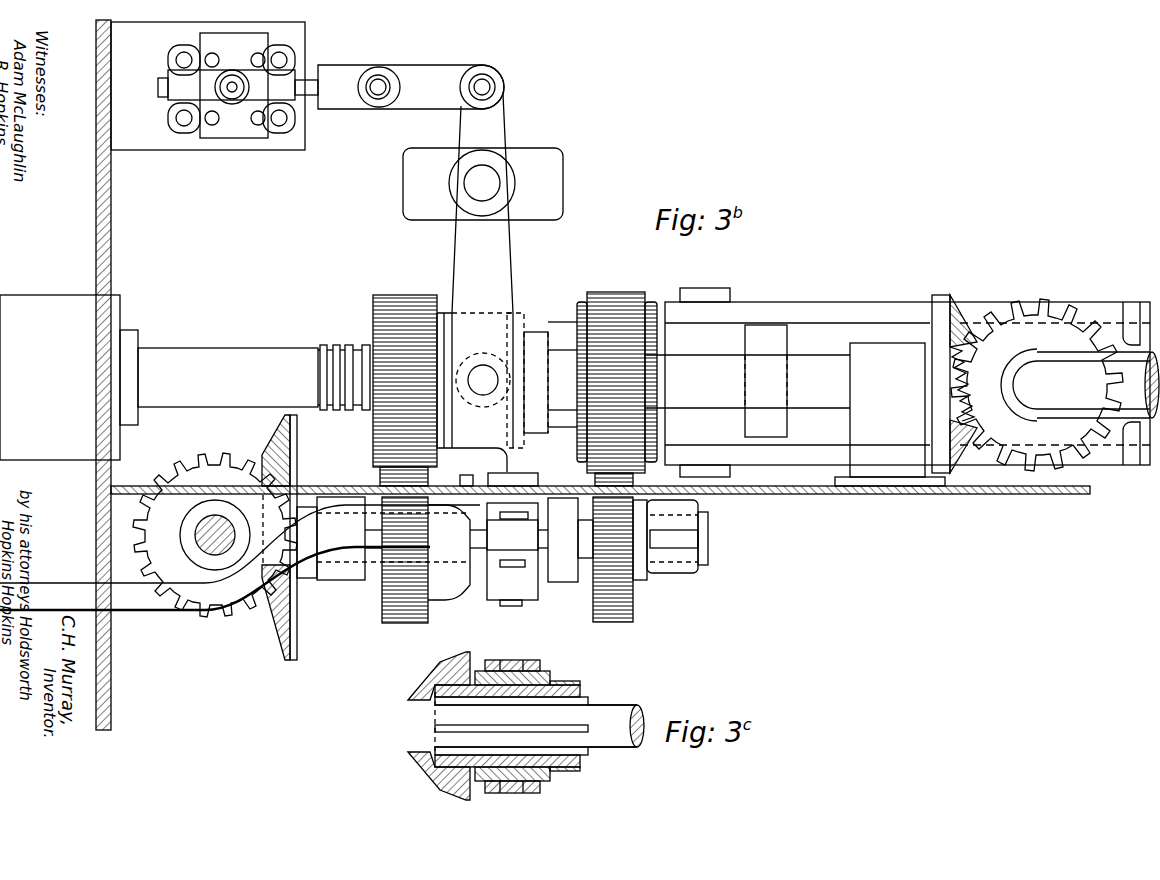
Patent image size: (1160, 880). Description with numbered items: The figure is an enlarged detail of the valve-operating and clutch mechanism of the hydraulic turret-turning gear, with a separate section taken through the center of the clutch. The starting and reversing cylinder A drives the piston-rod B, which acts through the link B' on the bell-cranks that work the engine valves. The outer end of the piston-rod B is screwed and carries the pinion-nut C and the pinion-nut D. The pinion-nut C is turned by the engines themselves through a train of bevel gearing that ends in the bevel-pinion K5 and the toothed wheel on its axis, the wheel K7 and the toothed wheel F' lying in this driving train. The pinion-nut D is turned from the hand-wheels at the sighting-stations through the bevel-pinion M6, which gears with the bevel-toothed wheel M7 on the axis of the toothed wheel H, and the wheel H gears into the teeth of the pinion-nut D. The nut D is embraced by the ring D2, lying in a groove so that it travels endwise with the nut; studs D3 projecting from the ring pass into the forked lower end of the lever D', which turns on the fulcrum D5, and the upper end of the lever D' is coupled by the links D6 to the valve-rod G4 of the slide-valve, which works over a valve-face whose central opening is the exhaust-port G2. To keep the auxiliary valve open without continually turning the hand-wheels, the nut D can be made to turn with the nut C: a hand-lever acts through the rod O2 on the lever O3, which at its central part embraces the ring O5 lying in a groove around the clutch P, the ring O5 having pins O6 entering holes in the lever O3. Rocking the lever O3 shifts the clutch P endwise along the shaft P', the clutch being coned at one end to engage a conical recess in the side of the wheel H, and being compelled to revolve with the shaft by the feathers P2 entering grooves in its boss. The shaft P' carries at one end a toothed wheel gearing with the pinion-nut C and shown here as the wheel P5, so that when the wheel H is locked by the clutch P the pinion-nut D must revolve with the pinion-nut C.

In FIG. 3B, the starting and reversing cylinder A is at (69, 377).
In FIG. 3B, the piston-rod B is at (254, 377).
In FIG. 3B, the link B' is at (897, 383).
In FIG. 3B, the pinion-nut C is at (575, 325).
In FIG. 3B, the pinion-nut D is at (391, 390).
In FIG. 3B, the lever D' is at (487, 290).
In FIG. 3B, the ring D2 is at (522, 322).
In FIG. 3B, the studs D3 is at (483, 380).
In FIG. 3B, the fulcrum D5 is at (483, 184).
In FIG. 3B, the links D6 is at (463, 87).
In FIG. 3B, the gear wheel F' is at (617, 375).
In FIG. 3B, the exhaust-port G2 is at (200, 90).
In FIG. 3B, the valve-rod G4 is at (411, 68).
In FIG. 3B, the toothed wheel H is at (406, 616).
In FIG. 3C, the toothed wheel H is at (410, 690).
In FIG. 3B, the bevel-pinion K5 is at (951, 384).
In FIG. 3B, the gear wheel K7 is at (1055, 385).
In FIG. 3B, the bevel-pinion M6 is at (215, 535).
In FIG. 3B, the bevel-toothed wheel M7 is at (288, 632).
In FIG. 3B, the rod O2 is at (135, 608).
In FIG. 3B, the lever O3 is at (504, 551).
In FIG. 3B, the ring O5 is at (575, 586).
In FIG. 3C, the ring O5 is at (551, 678).
In FIG. 3B, the pins O6 is at (506, 606).
In FIG. 3C, the pins O6 is at (512, 661).
In FIG. 3B, the clutch P is at (558, 540).
In FIG. 3C, the clutch P is at (520, 736).
In FIG. 3B, the shaft P' is at (689, 536).
In FIG. 3C, the shaft P' is at (622, 719).
In FIG. 3C, the feathers P2 is at (539, 722).
In FIG. 3B, the gear wheel P5 is at (636, 618).